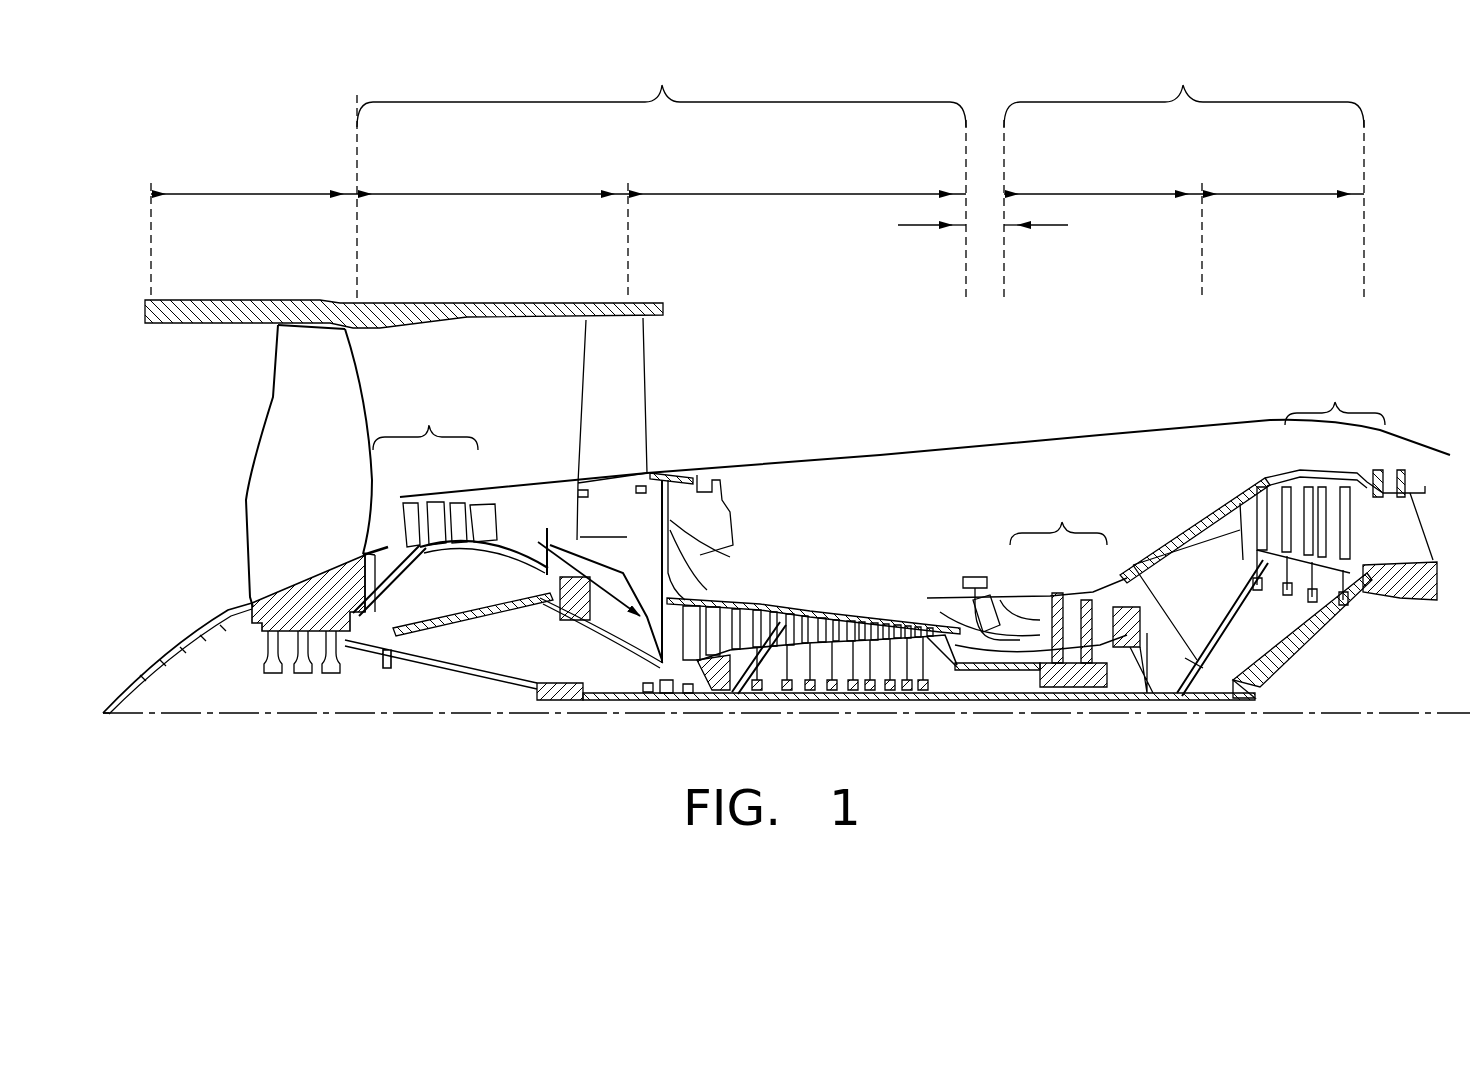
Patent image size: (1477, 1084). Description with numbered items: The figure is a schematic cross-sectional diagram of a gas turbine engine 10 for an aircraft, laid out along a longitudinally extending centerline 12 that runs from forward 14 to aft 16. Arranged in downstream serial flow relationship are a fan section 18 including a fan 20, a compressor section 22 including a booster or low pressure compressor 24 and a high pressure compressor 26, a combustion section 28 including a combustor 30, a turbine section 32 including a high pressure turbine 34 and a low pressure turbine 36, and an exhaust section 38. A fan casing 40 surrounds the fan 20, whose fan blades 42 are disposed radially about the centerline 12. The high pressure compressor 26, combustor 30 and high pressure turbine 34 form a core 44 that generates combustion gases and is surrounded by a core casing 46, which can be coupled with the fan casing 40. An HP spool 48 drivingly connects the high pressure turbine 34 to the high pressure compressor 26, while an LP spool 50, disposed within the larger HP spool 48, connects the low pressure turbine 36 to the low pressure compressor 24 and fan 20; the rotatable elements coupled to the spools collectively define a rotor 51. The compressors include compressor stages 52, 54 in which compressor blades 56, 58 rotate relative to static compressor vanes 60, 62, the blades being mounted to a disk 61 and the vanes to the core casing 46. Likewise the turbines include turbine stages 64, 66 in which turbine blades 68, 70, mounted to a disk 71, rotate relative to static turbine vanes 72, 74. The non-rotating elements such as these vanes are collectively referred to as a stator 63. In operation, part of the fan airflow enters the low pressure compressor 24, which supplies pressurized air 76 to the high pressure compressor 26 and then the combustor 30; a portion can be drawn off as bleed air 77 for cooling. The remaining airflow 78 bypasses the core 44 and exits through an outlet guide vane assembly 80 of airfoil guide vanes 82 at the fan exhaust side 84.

The gas turbine engine 10 is at (1384, 218).
The centerline 12 is at (233, 715).
The forward 14 is at (180, 438).
The aft 16 is at (1462, 533).
The fan section 18 is at (256, 194).
The fan 20 is at (226, 561).
The compressor section 22 is at (662, 85).
The low pressure compressor 24 is at (493, 194).
The high pressure compressor 26 is at (792, 194).
The combustion section 28 is at (910, 226).
The combustor 30 is at (997, 575).
The turbine section 32 is at (1183, 85).
The high pressure turbine 34 is at (1105, 194).
The low pressure turbine 36 is at (1290, 194).
The exhaust section 38 is at (1430, 508).
The fan casing 40 is at (397, 300).
The fan blades 42 is at (328, 368).
The core 44 is at (926, 484).
The core casing 46 is at (1185, 520).
The HP spool 48 is at (967, 670).
The LP spool 50 is at (560, 697).
The rotor 51 is at (827, 703).
The compressor stages 52 is at (429, 425).
The compressor stages 54 is at (813, 595).
The compressor blades 56 is at (435, 503).
The compressor blades 58 is at (713, 630).
The static compressor vanes 60 is at (413, 503).
The disk 61 is at (453, 548).
The static compressor vanes 62 is at (693, 617).
The stator 63 is at (693, 658).
The turbine stages 64 is at (1062, 522).
The turbine stages 66 is at (1335, 402).
The turbine blades 68 is at (1062, 612).
The turbine blades 70 is at (1345, 485).
The disk 71 is at (1073, 648).
The static turbine vanes 72 is at (1046, 608).
The static turbine vanes 74 is at (1328, 490).
The pressurized air 76 is at (600, 597).
The bleed air 77 is at (843, 570).
The airflow 78 is at (690, 378).
The outlet guide vane assembly 80 is at (664, 437).
The airfoil guide vanes 82 is at (592, 413).
The fan exhaust side 84 is at (664, 352).